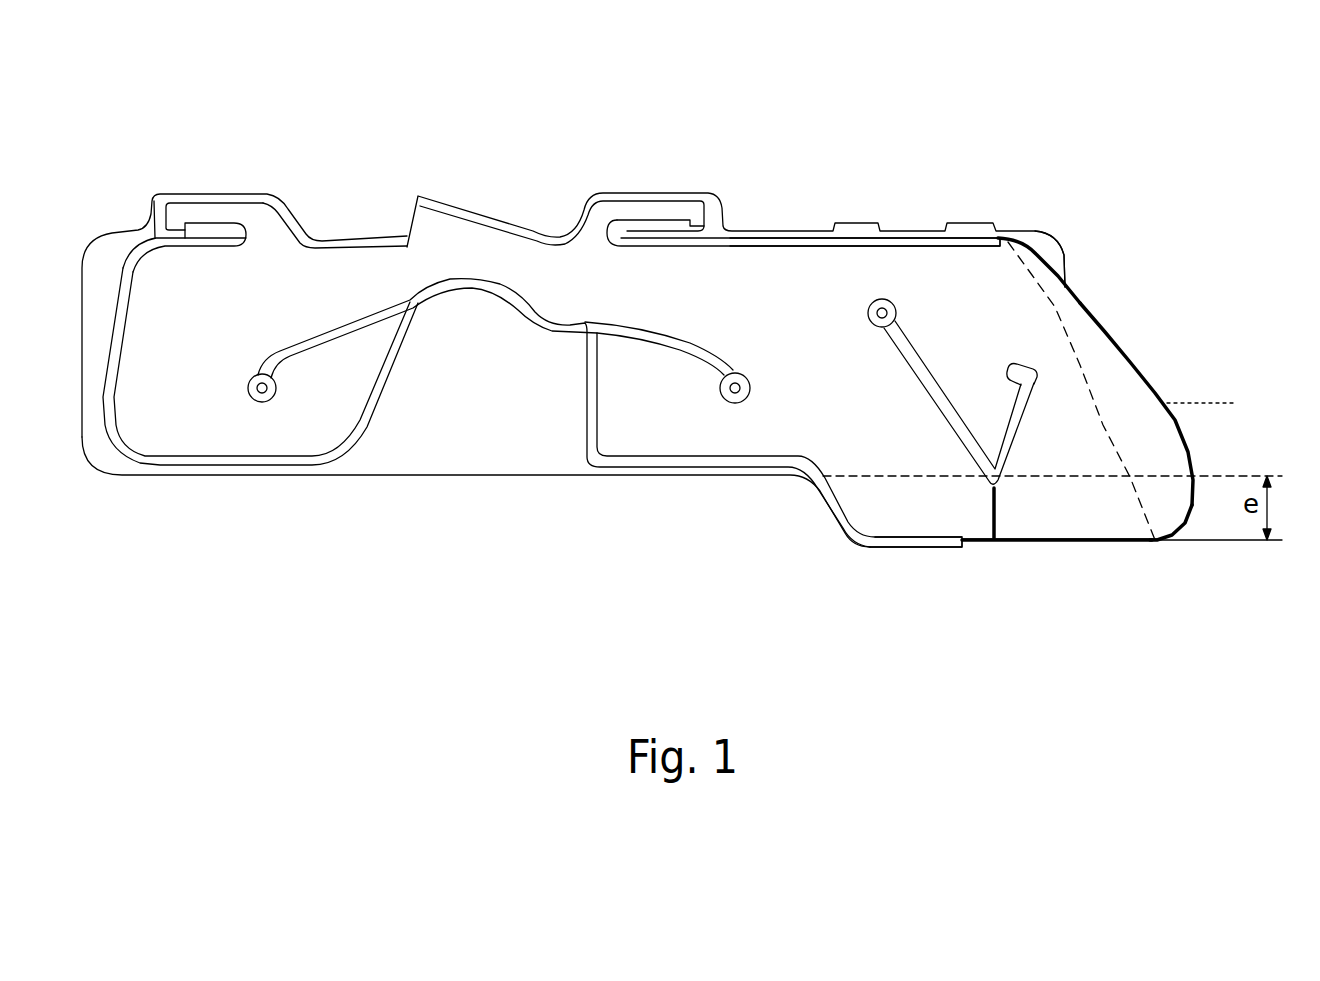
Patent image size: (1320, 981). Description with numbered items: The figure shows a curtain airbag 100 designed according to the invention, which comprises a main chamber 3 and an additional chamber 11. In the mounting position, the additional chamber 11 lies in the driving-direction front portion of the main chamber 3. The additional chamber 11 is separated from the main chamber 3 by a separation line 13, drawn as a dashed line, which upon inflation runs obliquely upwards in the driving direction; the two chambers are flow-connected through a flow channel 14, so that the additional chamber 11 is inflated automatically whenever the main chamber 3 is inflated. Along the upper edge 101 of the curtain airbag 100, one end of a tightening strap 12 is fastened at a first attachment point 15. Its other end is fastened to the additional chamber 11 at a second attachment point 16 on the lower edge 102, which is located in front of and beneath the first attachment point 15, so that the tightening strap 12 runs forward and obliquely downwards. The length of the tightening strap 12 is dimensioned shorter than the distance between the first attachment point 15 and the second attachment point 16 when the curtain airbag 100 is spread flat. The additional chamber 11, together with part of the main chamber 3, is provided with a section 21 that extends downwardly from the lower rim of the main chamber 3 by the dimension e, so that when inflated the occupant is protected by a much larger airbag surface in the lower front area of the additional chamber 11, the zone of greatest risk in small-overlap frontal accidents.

The curtain airbag 100 is at (525, 188).
The upper edge 101 is at (897, 237).
The lower edge 102 is at (915, 543).
The main chamber 3 is at (747, 270).
The first attachment point 15 is at (1043, 243).
The flow channel 14 is at (1048, 337).
The separation line 13 is at (1030, 414).
The tightening strap 12 is at (1118, 428).
The additional chamber 11 is at (1090, 453).
The section 21 is at (1058, 527).
The second attachment point 16 is at (1153, 542).